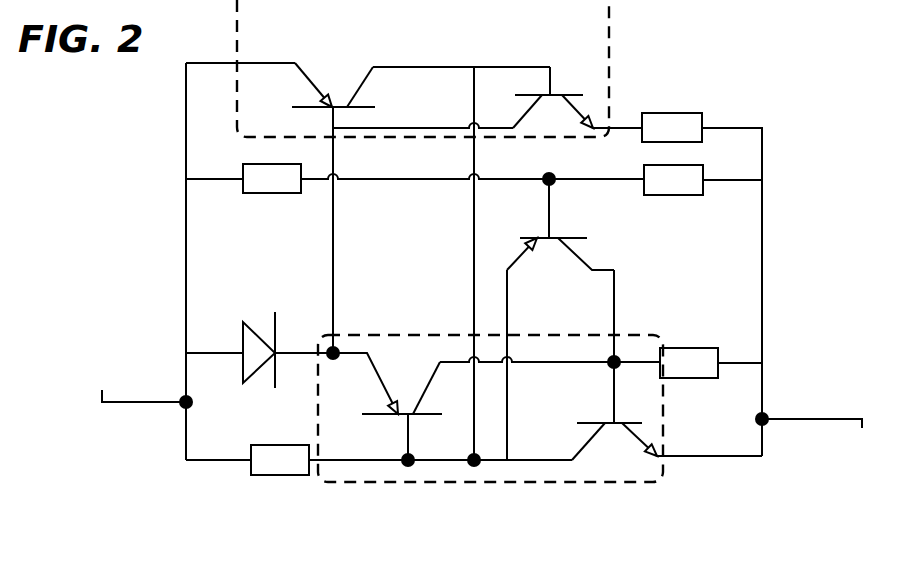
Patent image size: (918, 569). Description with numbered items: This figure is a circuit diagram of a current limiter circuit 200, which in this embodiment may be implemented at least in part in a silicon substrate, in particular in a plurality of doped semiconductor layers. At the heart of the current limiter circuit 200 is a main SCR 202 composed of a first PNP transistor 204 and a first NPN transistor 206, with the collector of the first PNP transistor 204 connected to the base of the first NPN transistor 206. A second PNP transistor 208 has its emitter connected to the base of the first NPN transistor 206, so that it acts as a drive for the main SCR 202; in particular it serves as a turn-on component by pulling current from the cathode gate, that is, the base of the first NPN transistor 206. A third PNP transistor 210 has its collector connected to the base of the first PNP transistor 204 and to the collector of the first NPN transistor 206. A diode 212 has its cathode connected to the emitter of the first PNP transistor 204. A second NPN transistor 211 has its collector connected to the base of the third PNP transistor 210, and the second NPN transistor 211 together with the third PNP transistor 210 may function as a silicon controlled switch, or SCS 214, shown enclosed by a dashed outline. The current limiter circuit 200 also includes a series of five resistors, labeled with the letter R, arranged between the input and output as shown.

The current limiter circuit 200 is at (490, 545).
The main SCR 202 is at (490, 482).
The first PNP transistor 204 is at (384, 414).
The first NPN transistor 206 is at (605, 425).
The second PNP transistor 208 is at (552, 236).
The third PNP transistor 210 is at (365, 80).
The second NPN transistor 211 is at (563, 93).
The diode 212 is at (263, 333).
The SCS 214 is at (609, 20).